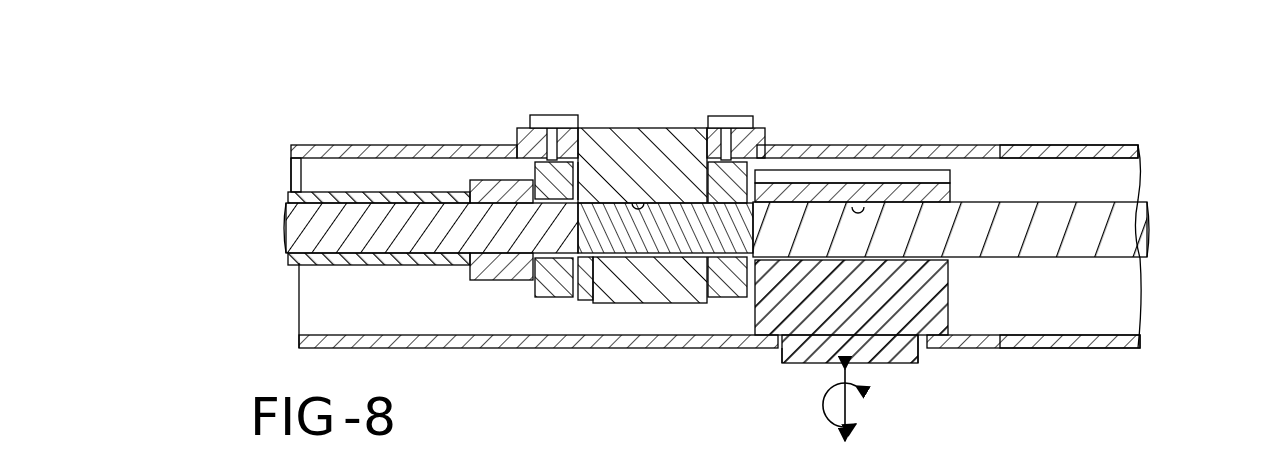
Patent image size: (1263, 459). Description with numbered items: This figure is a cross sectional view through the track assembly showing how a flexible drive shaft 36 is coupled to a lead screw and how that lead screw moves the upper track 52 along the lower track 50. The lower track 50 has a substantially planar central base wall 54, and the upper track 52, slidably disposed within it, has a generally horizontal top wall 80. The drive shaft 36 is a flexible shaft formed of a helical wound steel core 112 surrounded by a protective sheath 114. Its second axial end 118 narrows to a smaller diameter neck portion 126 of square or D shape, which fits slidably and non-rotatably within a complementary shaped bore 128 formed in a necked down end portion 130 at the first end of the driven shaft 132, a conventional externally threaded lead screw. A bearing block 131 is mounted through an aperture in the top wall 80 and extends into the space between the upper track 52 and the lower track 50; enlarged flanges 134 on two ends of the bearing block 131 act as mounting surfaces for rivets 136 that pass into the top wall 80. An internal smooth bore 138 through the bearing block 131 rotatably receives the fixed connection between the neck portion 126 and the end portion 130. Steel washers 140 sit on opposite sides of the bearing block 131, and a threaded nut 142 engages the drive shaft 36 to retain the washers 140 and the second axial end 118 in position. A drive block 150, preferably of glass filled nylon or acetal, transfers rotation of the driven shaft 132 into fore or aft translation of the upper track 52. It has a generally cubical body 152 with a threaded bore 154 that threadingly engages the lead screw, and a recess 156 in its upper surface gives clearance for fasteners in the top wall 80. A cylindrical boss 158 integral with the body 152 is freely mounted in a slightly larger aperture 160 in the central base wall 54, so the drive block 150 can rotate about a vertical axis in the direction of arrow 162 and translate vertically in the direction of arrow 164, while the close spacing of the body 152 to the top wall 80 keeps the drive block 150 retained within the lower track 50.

The drive shaft 36 is at (333, 188).
The lower track 50 is at (1060, 342).
The upper track 52 is at (957, 145).
The central base wall 54 is at (1117, 352).
The top wall 80 is at (1040, 152).
The helical wound steel core 112 is at (297, 235).
The protective sheath 114 is at (297, 187).
The second axial end 118 is at (320, 267).
The neck portion 126 is at (585, 285).
The bore 128 is at (497, 208).
The necked down end portion 130 is at (650, 258).
The bearing block 131 is at (608, 133).
The driven shaft 132 is at (1127, 228).
The enlarged flanges 134 is at (517, 133).
The rivets 136 is at (543, 117).
The smooth bore 138 is at (640, 207).
The steel washers 140 is at (712, 168).
The threaded nut 142 is at (487, 283).
The drive block 150 is at (940, 307).
The body 152 is at (950, 337).
The threaded bore 154 is at (858, 207).
The recess 156 is at (785, 180).
The cylindrical boss 158 is at (903, 350).
The aperture 160 is at (790, 345).
The arrow 162 is at (823, 410).
The arrow 164 is at (852, 405).